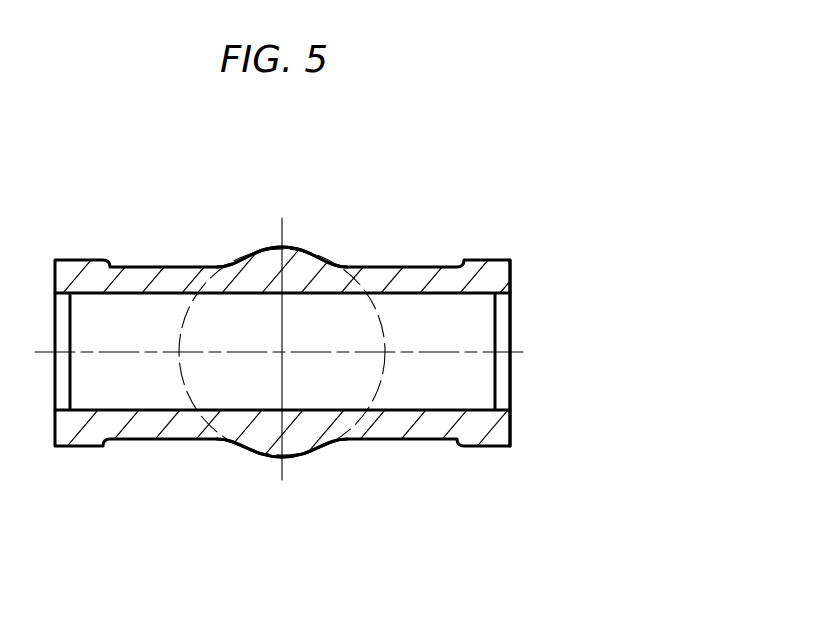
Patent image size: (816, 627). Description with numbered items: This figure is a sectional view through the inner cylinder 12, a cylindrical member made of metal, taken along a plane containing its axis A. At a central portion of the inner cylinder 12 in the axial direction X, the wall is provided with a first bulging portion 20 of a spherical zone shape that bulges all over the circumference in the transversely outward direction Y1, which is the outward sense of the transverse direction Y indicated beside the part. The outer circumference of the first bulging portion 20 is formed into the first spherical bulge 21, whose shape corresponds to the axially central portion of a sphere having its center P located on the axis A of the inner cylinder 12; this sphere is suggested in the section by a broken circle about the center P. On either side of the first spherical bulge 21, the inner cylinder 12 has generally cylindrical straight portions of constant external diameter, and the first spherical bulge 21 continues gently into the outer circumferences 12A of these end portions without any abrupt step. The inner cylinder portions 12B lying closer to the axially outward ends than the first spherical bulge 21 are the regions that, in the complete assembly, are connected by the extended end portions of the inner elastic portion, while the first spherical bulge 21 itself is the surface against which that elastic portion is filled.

The inner cylinder 12 is at (291, 165).
The outer circumferences of the generally cylindrical portions 12A is at (177, 440).
The inner cylinder portions 12B is at (177, 273).
The first bulging portion 20 is at (313, 262).
The first spherical bulge 21 is at (300, 457).
The center P is at (282, 352).
The axis A is at (522, 355).
The axial direction X is at (491, 197).
The transverse direction Y is at (569, 250).
The transversely outward direction Y1 is at (642, 233).